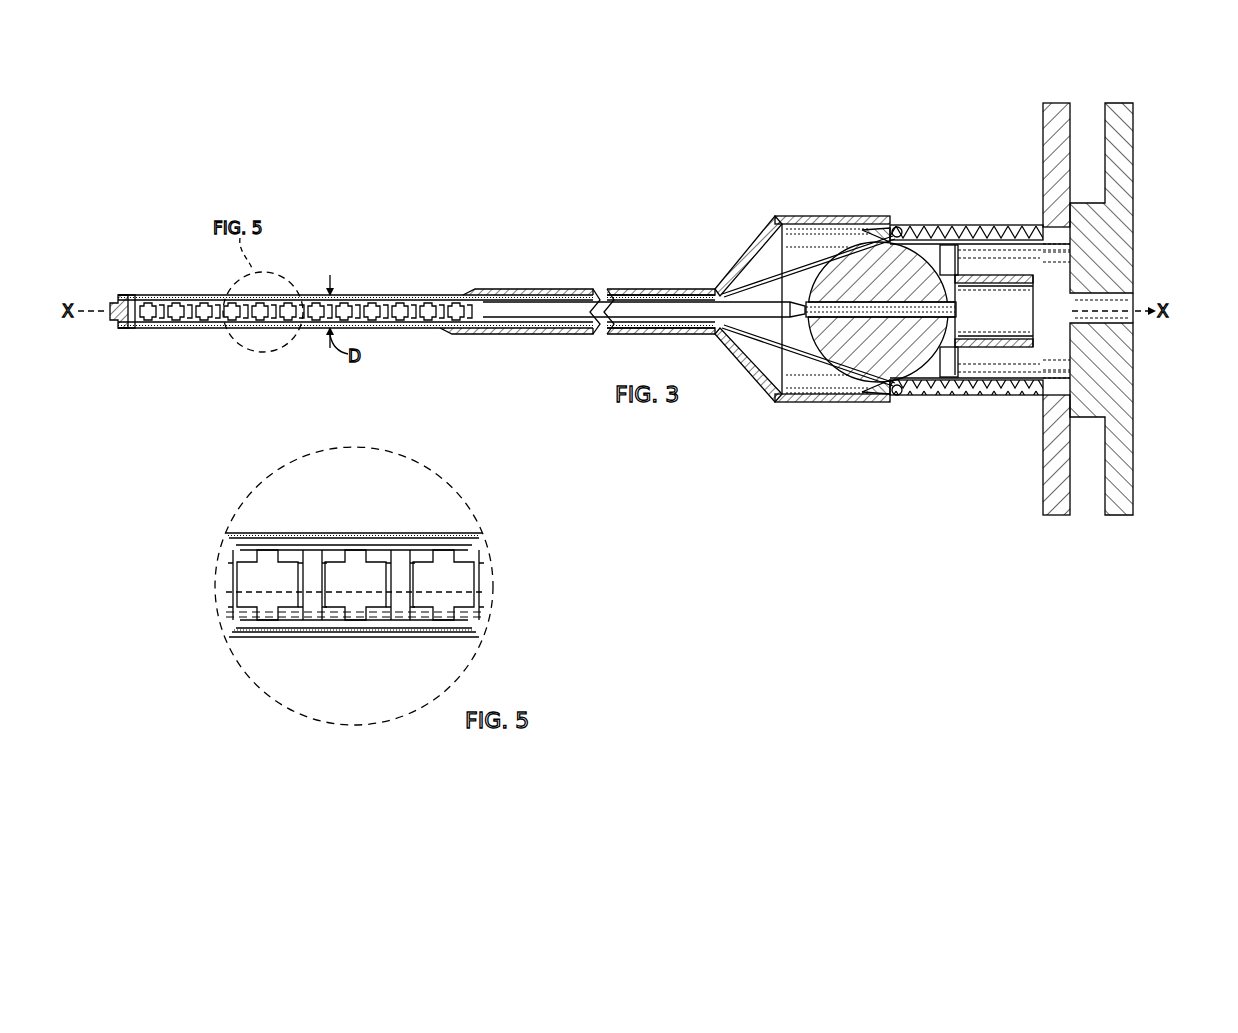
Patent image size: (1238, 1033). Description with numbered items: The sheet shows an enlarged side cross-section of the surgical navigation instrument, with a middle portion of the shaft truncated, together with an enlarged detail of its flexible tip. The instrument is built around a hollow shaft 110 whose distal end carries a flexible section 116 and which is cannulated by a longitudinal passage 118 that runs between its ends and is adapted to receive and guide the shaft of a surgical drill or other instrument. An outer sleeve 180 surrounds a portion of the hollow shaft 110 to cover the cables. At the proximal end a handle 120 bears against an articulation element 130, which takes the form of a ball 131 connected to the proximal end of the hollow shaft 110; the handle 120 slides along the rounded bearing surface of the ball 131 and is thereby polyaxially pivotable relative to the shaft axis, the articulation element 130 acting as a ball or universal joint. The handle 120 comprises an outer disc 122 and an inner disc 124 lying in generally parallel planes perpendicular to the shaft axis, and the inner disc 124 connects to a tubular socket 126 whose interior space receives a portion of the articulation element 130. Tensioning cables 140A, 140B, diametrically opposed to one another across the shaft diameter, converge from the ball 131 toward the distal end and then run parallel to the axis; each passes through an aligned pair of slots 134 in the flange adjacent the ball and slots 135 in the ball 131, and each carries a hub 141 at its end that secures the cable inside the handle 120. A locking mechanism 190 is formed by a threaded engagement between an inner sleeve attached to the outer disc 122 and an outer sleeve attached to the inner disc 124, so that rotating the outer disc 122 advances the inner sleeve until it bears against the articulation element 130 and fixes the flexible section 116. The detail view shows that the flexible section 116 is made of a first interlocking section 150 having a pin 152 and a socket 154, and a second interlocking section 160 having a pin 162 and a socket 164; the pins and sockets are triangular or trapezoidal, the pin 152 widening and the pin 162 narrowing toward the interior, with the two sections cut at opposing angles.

In FIG. 3, the hollow shaft 110 is at (357, 295).
In FIG. 3, the flexible section 116 is at (183, 297).
In FIG. 5, the flexible section 116 is at (220, 582).
In FIG. 3, the longitudinal passage 118 is at (510, 318).
In FIG. 3, the handle 120 is at (1053, 518).
In FIG. 3, the outer disc 122 is at (1120, 103).
In FIG. 3, the inner disc 124 is at (1052, 103).
In FIG. 3, the tubular socket 126 is at (946, 382).
In FIG. 3, the articulation element 130 is at (806, 330).
In FIG. 3, the ball 131 is at (925, 237).
In FIG. 3, the slots 134 is at (940, 378).
In FIG. 3, the slots 135 is at (927, 230).
In FIG. 3, the cable 140A is at (767, 278).
In FIG. 3, the cable 140B is at (755, 343).
In FIG. 3, the hub 141 is at (897, 400).
In FIG. 3, the outer sleeve 180 is at (546, 290).
In FIG. 3, the locking mechanism 190 is at (973, 226).
In FIG. 5, the first interlocking section 150 is at (310, 630).
In FIG. 5, the pin 152 is at (334, 614).
In FIG. 5, the socket 154 is at (298, 590).
In FIG. 5, the second interlocking section 160 is at (362, 630).
In FIG. 5, the pin 162 is at (327, 590).
In FIG. 5, the socket 164 is at (367, 608).